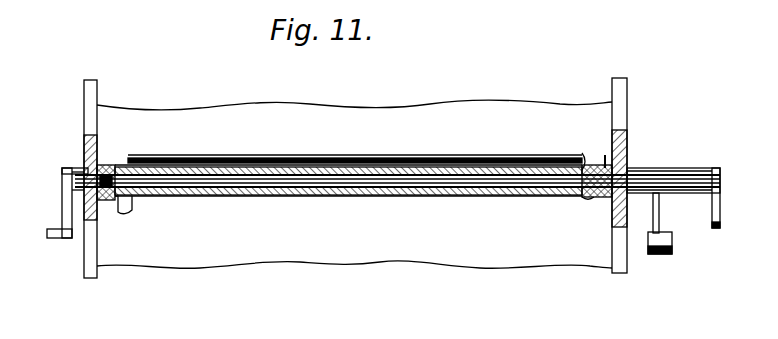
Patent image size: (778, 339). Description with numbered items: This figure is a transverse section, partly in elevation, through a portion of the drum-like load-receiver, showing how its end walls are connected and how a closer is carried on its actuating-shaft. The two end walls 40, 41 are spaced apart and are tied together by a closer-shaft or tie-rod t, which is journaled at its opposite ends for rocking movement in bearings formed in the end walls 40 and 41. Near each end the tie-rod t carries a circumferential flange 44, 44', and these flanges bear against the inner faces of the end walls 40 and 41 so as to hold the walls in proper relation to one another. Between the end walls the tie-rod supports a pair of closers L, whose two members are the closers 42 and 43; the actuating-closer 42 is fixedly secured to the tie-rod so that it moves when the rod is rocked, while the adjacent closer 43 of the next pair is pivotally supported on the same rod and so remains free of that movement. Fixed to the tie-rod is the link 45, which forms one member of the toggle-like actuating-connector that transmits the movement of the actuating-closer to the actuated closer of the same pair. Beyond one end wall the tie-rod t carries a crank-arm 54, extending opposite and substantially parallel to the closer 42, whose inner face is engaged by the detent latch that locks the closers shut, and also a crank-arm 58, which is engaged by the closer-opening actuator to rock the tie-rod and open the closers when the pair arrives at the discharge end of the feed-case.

The end wall 40 is at (618, 105).
The end wall 41 is at (89, 110).
The closer 42 is at (283, 262).
The closer 43 is at (210, 112).
The circumferential flange 44 is at (593, 193).
The circumferential flange 44' is at (114, 170).
The link 45 is at (659, 217).
The crank-arm 54 is at (62, 210).
The crank-arm 58 is at (718, 200).
The pair of closers L is at (356, 147).
The tie-rod t is at (262, 196).